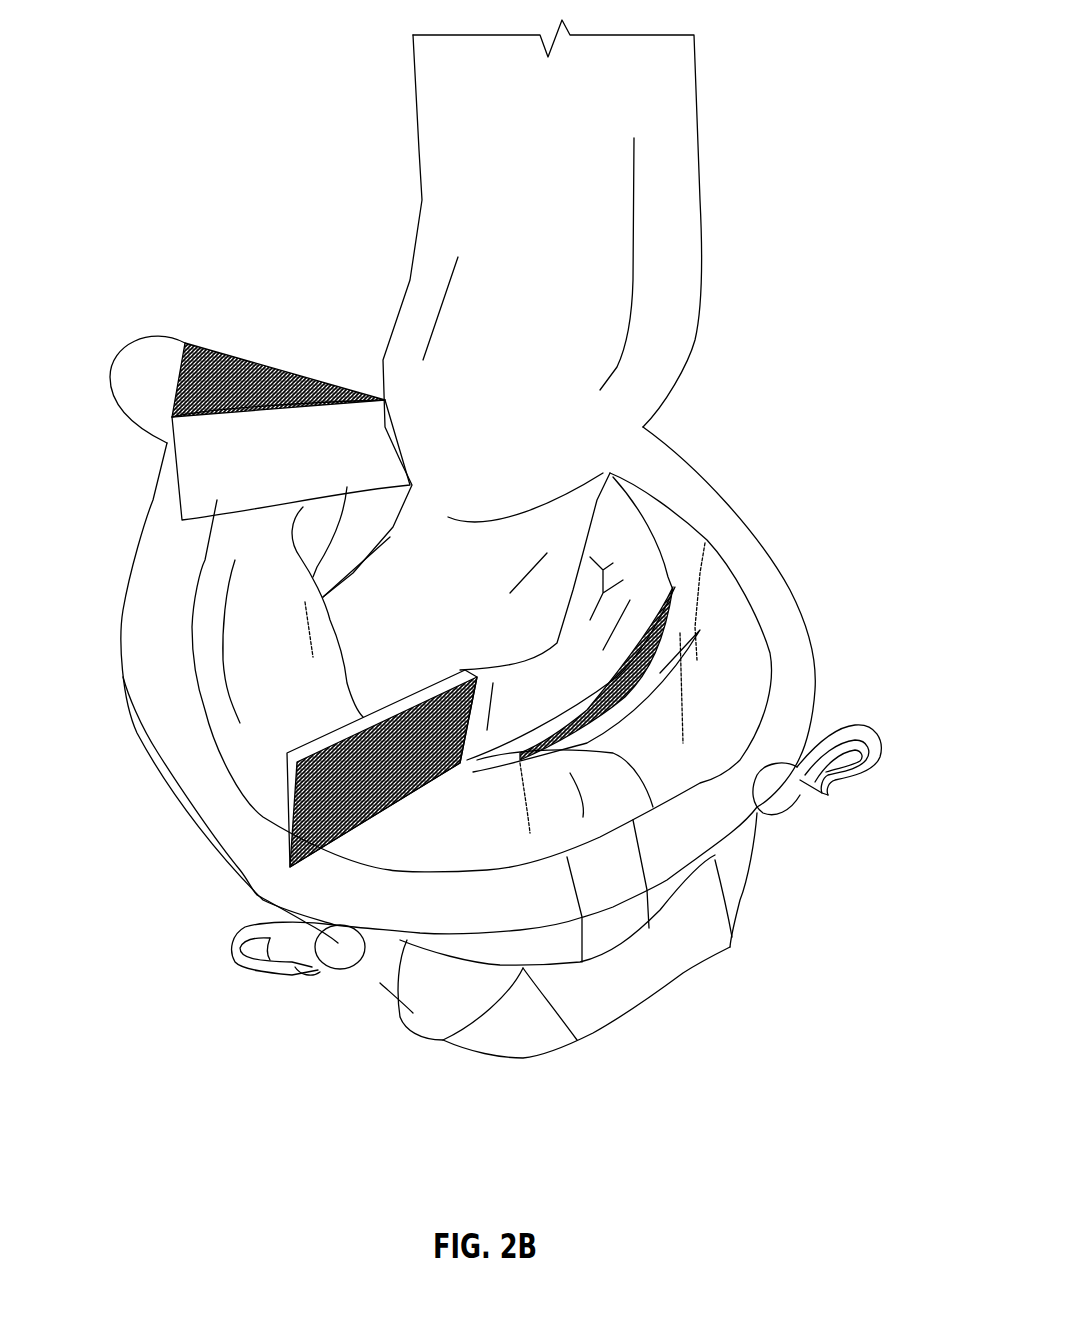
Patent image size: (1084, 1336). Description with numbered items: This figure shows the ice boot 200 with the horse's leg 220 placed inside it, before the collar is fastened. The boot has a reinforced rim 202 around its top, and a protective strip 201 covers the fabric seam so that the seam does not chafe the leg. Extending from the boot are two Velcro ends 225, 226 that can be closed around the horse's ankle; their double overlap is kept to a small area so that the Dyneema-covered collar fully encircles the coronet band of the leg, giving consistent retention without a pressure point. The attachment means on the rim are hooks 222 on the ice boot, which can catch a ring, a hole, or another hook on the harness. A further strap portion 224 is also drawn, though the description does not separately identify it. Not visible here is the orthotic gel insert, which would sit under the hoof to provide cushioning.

The foot bag assembly 200 is at (859, 1162).
The protective strip 201 is at (615, 920).
The reinforced rim 202 is at (360, 907).
The horse's leg 220 is at (680, 320).
The hooks 222 is at (883, 767).
The strap end 224 is at (640, 628).
The Velcro end 225 is at (337, 740).
The Velcro end 226 is at (263, 362).